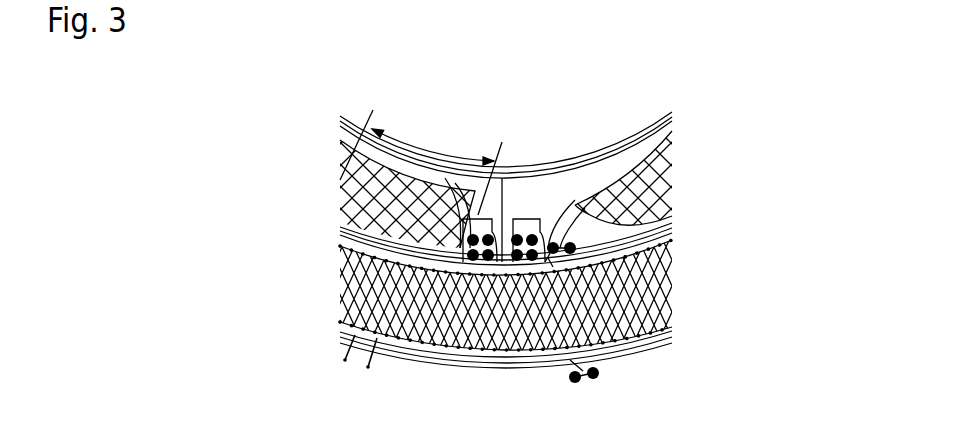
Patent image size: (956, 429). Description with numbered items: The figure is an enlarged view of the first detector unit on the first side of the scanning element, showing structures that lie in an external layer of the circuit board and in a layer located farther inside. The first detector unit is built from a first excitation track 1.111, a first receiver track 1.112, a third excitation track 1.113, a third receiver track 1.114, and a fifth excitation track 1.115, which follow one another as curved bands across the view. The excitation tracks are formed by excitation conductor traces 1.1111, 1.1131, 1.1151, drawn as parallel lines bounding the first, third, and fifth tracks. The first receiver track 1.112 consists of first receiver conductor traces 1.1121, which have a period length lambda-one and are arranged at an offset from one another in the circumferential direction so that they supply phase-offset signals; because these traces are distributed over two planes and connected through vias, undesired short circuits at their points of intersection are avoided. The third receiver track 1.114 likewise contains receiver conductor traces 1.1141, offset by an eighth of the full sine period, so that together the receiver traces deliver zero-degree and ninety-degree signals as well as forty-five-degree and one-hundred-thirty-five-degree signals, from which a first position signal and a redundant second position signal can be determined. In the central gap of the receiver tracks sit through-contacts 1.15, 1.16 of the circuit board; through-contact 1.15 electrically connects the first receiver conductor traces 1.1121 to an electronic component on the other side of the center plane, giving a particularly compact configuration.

The first excitation track 1.111 is at (340, 121).
The excitation conductor traces 1.1111 is at (675, 113).
The first receiver track 1.112 is at (340, 178).
The first receiver conductor traces 1.1121 is at (585, 175).
The third excitation track 1.113 is at (340, 232).
The excitation conductor traces 1.1131 is at (675, 222).
The third receiver track 1.114 is at (340, 283).
The receiver conductor traces 1.1141 is at (675, 254).
The fifth excitation track 1.115 is at (340, 335).
The excitation conductor traces 1.1151 is at (675, 335).
The through-contact 1.15 is at (535, 237).
The through-contact 1.16 is at (550, 217).